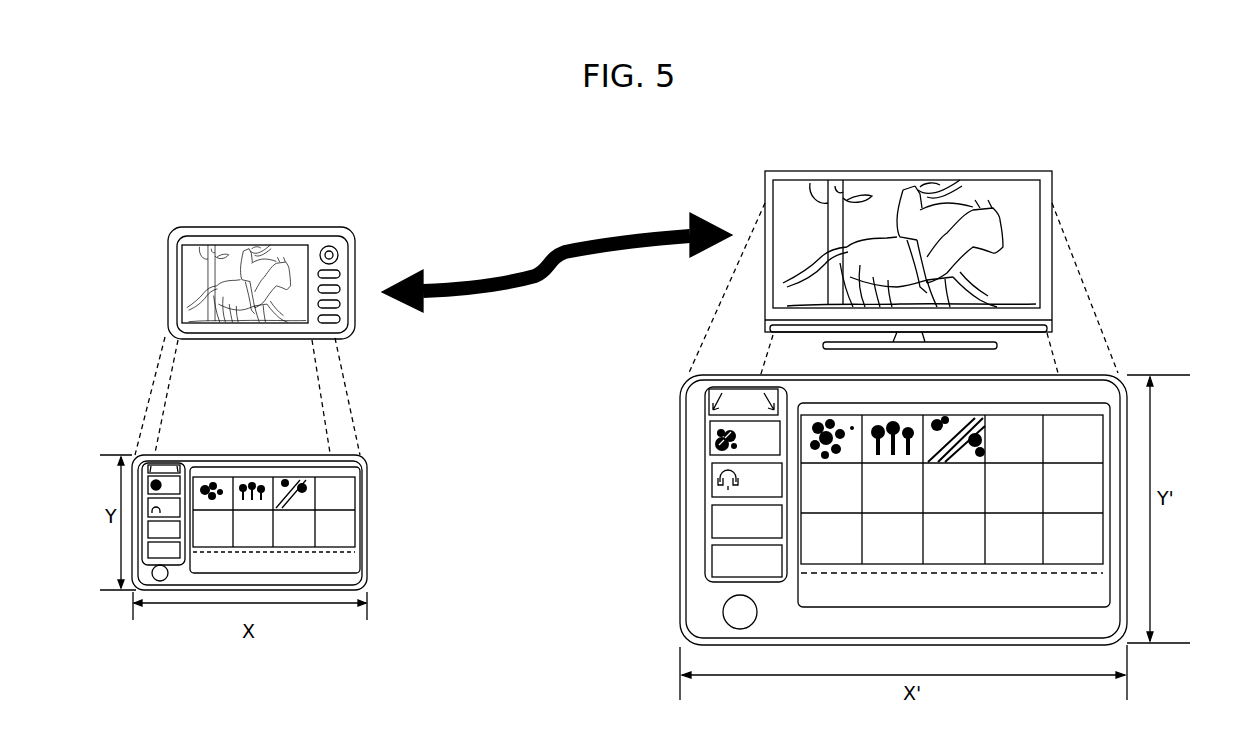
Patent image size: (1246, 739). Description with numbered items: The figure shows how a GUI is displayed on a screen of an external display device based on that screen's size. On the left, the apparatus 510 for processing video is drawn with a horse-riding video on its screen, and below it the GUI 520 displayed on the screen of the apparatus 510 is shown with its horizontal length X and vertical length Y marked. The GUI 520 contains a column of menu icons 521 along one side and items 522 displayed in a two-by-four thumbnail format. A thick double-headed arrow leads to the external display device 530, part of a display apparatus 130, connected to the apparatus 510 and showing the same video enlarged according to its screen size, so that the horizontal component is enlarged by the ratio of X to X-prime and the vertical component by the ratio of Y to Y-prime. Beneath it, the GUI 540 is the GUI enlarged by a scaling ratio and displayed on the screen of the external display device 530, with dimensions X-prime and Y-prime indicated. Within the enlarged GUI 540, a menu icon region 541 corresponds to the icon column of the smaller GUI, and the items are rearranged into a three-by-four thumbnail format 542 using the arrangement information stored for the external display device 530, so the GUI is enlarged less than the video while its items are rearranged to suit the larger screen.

The display apparatus 130 is at (971, 237).
The apparatus for processing video 510 is at (312, 228).
The GUI 520 is at (284, 516).
The menu icon region 521 is at (133, 585).
The items 522 is at (361, 519).
The external display device 530 is at (995, 171).
The enlarged GUI 540 is at (924, 485).
The menu icon region of display apparatus 541 is at (707, 495).
The three-by-four thumbnail format 542 is at (1128, 568).